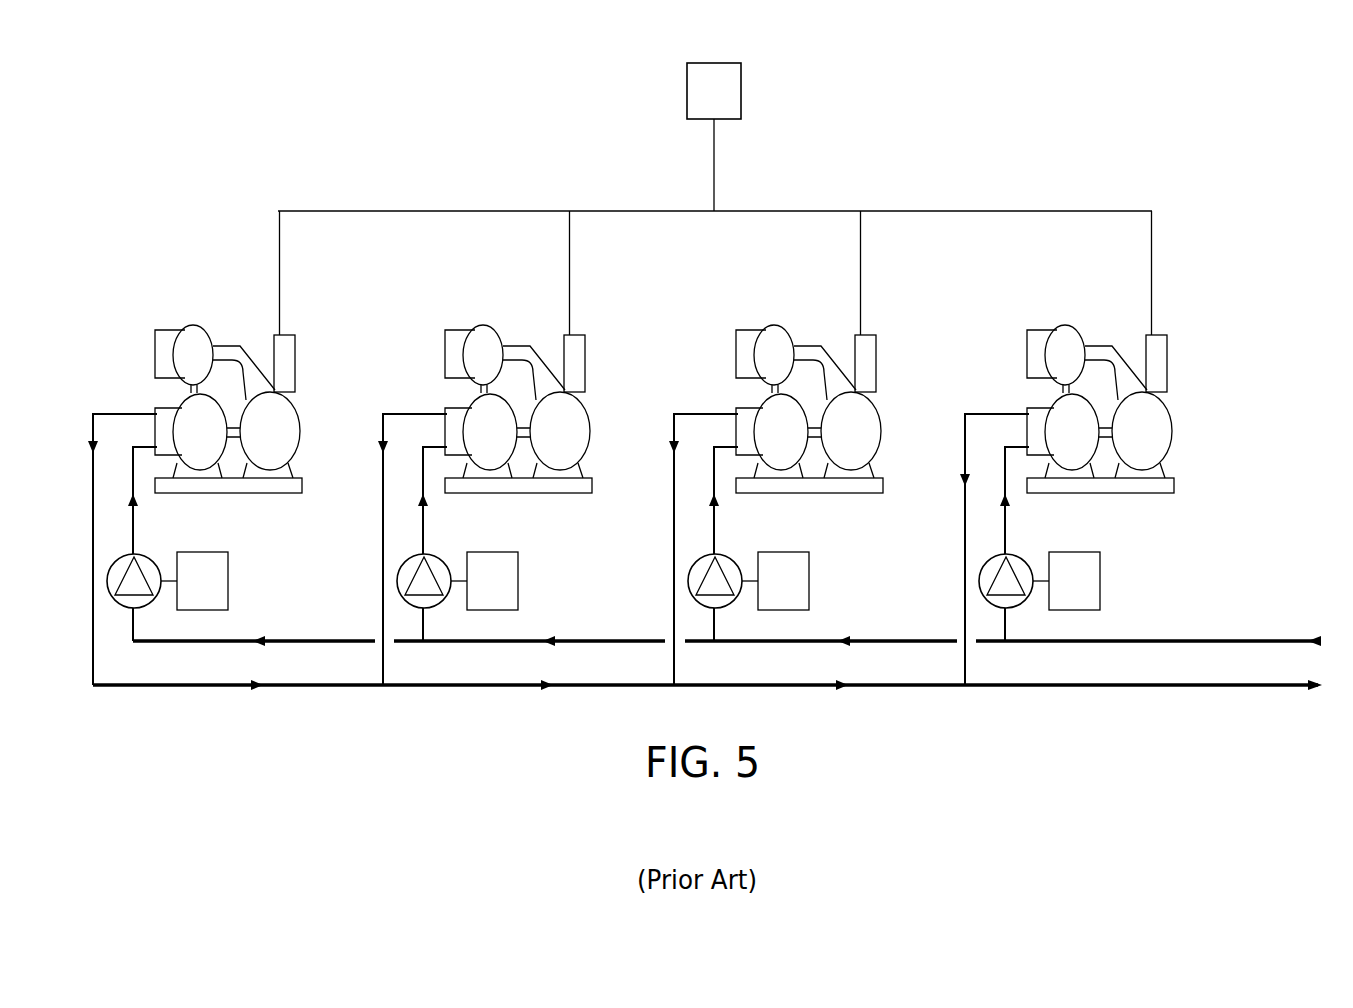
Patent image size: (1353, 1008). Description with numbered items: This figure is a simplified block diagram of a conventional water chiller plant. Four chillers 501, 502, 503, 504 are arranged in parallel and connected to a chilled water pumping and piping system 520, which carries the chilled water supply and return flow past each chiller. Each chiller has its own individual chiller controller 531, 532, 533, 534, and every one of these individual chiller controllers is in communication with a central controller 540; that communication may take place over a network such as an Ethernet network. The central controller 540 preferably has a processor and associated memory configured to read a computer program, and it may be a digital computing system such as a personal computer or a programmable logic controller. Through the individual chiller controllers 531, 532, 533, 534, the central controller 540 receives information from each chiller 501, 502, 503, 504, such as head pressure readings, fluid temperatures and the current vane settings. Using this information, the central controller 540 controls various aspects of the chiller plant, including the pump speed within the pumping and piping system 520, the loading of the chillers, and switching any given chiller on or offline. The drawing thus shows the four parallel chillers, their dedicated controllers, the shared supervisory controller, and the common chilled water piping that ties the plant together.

The chiller 501 is at (190, 323).
The chiller 502 is at (480, 323).
The chiller 503 is at (771, 323).
The chiller 504 is at (1062, 323).
The individual chiller controller 531 is at (295, 347).
The individual chiller controller 532 is at (585, 347).
The individual chiller controller 533 is at (876, 347).
The individual chiller controller 534 is at (1167, 347).
The controller 540 is at (743, 89).
The chilled water pumping and piping system 520 is at (1320, 660).